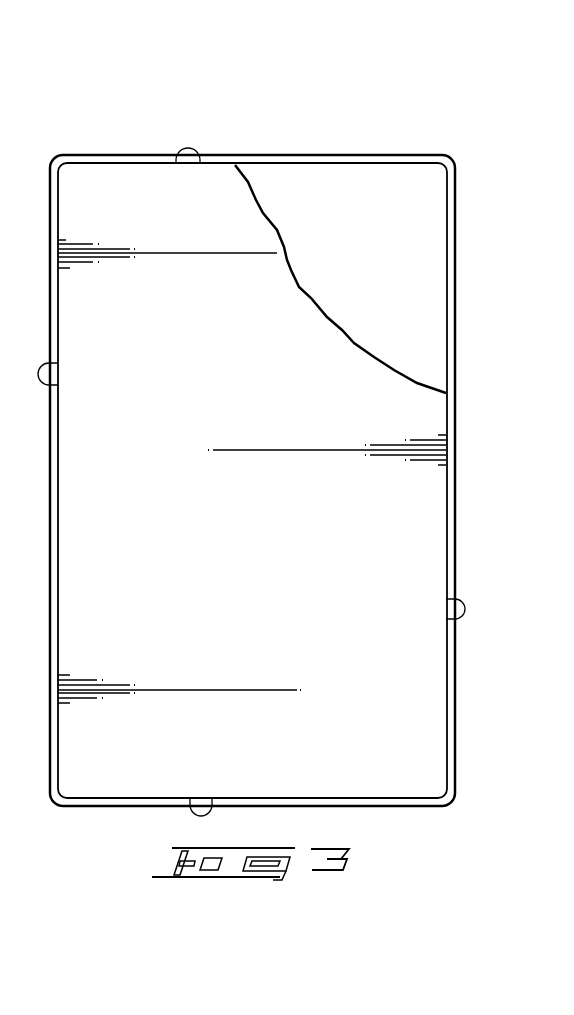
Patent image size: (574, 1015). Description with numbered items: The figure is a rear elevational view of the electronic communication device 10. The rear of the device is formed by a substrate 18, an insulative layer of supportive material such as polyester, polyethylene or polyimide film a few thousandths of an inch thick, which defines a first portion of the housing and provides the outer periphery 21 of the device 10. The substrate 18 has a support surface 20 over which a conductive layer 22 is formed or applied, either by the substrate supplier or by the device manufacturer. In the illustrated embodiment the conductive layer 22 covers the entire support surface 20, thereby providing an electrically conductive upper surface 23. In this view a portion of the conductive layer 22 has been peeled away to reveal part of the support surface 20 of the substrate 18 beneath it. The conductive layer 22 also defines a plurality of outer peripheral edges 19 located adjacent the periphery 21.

The electronic communication device 10 is at (178, 78).
The substrate 18 is at (100, 155).
The outer peripheral edges 19 is at (199, 158).
The support surface 20 is at (401, 275).
The outer periphery 21 is at (151, 152).
The conductive layer 22 is at (260, 188).
The electrically conductive upper surface 23 is at (248, 538).